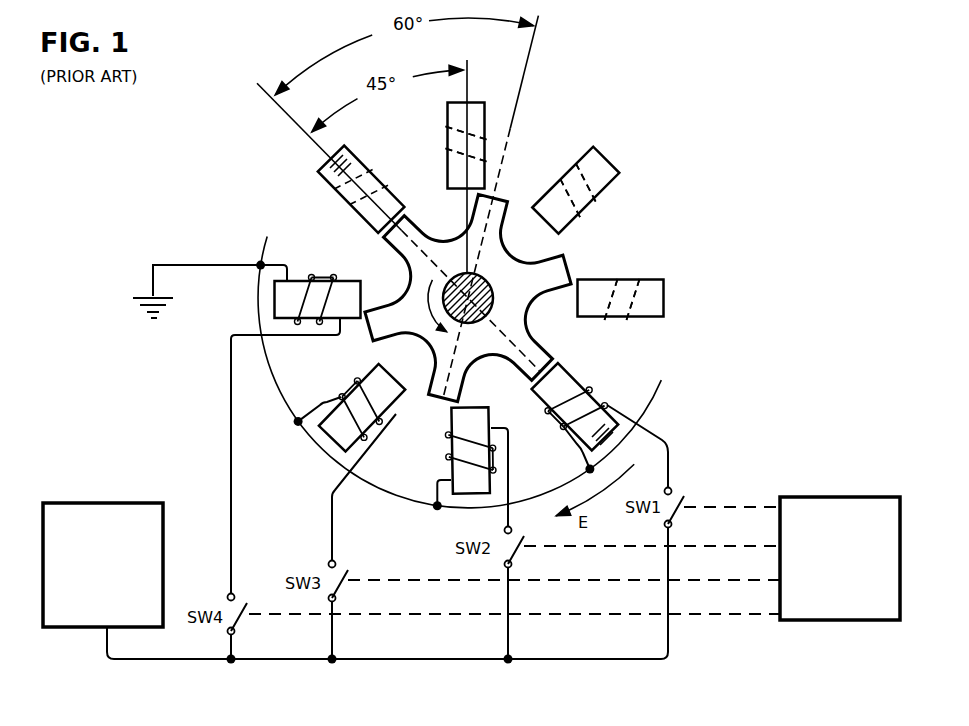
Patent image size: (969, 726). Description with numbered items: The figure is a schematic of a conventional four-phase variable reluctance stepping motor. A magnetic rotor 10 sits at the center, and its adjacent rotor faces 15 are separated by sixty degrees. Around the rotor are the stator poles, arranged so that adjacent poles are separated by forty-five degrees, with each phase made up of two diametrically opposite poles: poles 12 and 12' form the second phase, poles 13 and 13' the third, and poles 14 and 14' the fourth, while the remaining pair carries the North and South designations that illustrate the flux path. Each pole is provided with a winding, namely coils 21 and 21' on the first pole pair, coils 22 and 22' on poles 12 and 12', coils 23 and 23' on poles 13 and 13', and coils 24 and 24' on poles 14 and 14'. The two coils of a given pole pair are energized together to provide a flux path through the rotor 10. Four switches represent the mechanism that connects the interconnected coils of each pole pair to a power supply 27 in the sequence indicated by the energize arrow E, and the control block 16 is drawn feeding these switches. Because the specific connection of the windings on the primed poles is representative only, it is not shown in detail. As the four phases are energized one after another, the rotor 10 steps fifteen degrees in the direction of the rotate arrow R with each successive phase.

The magnetic rotor 10 is at (521, 265).
The pole 12 is at (470, 450).
The pole 12' is at (465, 146).
The pole 13 is at (362, 408).
The pole 13' is at (575, 190).
The pole 14 is at (318, 299).
The pole 14' is at (621, 298).
The rotor face 15 is at (368, 335).
The control unit 16 is at (838, 497).
The coil 21 is at (590, 406).
The coil 21' is at (338, 189).
The coil 22 is at (446, 453).
The coil 22' is at (440, 143).
The coil 23 is at (341, 405).
The coil 23' is at (562, 175).
The coil 24 is at (315, 282).
The coil 24' is at (637, 278).
The power supply 27 is at (91, 503).